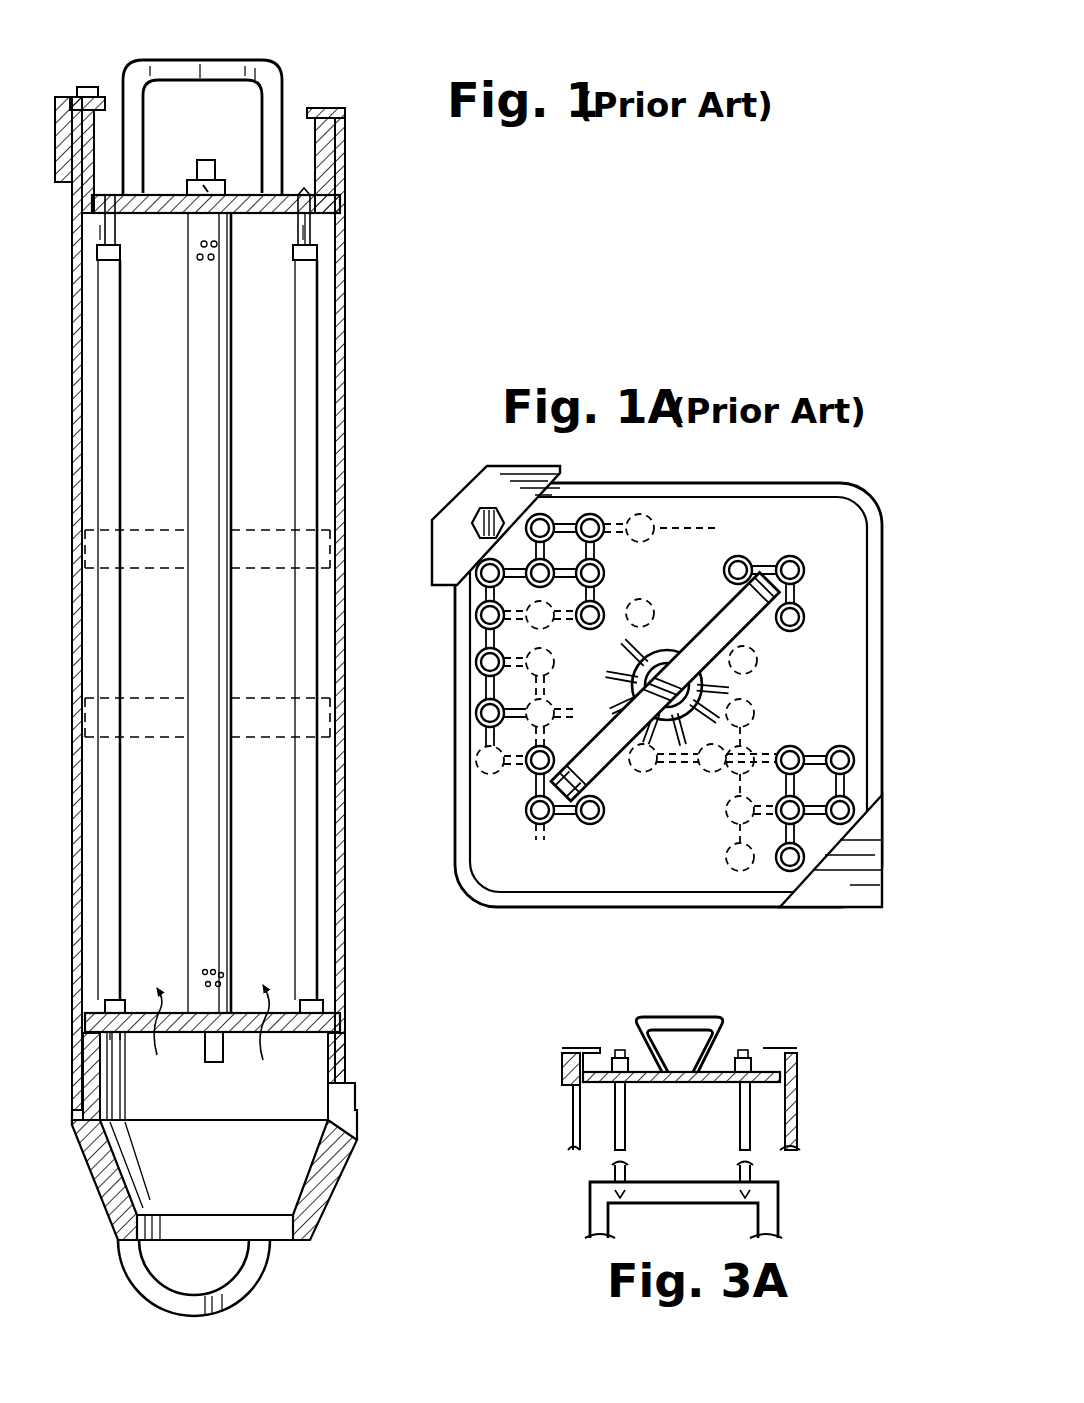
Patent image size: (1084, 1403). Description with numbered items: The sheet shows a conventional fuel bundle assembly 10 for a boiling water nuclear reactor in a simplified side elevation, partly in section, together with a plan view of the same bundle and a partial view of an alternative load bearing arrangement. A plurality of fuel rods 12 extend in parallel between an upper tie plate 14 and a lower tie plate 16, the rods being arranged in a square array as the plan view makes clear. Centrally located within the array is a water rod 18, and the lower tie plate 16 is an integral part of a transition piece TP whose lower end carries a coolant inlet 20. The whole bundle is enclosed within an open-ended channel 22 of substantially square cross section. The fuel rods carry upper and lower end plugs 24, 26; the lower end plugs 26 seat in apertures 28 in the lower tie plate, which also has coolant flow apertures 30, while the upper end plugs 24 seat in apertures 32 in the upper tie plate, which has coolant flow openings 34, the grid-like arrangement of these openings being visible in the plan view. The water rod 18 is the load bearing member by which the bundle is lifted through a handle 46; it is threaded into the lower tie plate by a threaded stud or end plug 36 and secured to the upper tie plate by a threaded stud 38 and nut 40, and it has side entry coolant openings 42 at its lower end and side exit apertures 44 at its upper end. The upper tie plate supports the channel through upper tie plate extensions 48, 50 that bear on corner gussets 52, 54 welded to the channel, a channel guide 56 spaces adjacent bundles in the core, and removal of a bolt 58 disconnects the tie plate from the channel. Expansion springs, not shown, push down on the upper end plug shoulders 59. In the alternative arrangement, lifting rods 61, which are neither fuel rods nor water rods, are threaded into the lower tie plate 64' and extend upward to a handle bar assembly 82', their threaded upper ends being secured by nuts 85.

In FIG. 1, the fuel bundle assembly 10 is at (368, 275).
In FIG. 1, the fuel rods 12 is at (118, 498).
In FIG. 1, the upper tie plate 14 is at (158, 200).
In FIG. 1A, the upper tie plate 14 is at (478, 718).
In FIG. 1, the lower tie plate 16 is at (185, 1005).
In FIG. 1, the water rod 18 is at (225, 620).
In FIG. 1, the coolant inlet 20 is at (197, 1228).
In FIG. 1, the channel 22 is at (347, 458).
In FIG. 1A, the channel 22 is at (715, 488).
In FIG. 1, the upper end plugs 24 is at (100, 238).
In FIG. 1, the lower end plugs 26 is at (110, 1000).
In FIG. 1, the apertures 28 is at (95, 1025).
In FIG. 1, the coolant flow apertures 30 is at (160, 985).
In FIG. 1, the apertures 32 is at (345, 197).
In FIG. 1A, the apertures 32 is at (592, 528).
In FIG. 1, the coolant flow openings 34 is at (262, 215).
In FIG. 1A, the coolant flow openings 34 is at (480, 582).
In FIG. 1, the threaded stud or end plug 36 is at (208, 1076).
In FIG. 1, the threaded stud 38 is at (224, 177).
In FIG. 1, the nut 40 is at (212, 160).
In FIG. 1, the side entry coolant openings 42 is at (228, 972).
In FIG. 1, the side exit apertures 44 is at (196, 262).
In FIG. 1, the handle 46 is at (178, 62).
In FIG. 1A, the handle 46 is at (700, 628).
In FIG. 1, the upper tie plate extension 48 is at (90, 148).
In FIG. 1, the upper tie plate extension 50 is at (297, 138).
In FIG. 1, the corner gusset 52 is at (66, 97).
In FIG. 1, the corner gusset 54 is at (325, 108).
In FIG. 1A, the corner gusset 54 is at (862, 878).
In FIG. 1, the channel guide 56 is at (55, 153).
In FIG. 1A, the channel guide 56 is at (445, 525).
In FIG. 1, the bolt 58 is at (87, 87).
In FIG. 1A, the bolt 58 is at (476, 530).
In FIG. 1, the upper end plug shoulders 59 is at (325, 238).
In FIG. 1, the transition piece TP is at (345, 1132).
In FIG. 3A, the lifting rods 61 is at (740, 1103).
In FIG. 3A, the handle bar assembly 82' is at (679, 1017).
In FIG. 3A, the nuts 85 is at (630, 1055).
In FIG. 3A, the lower tie plate 64' is at (683, 1180).